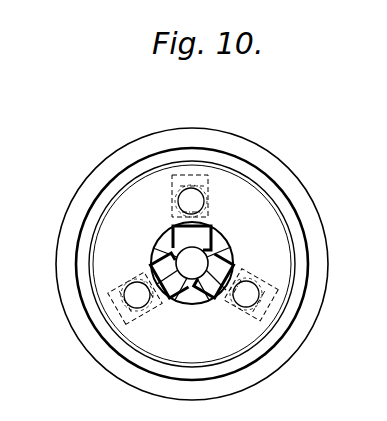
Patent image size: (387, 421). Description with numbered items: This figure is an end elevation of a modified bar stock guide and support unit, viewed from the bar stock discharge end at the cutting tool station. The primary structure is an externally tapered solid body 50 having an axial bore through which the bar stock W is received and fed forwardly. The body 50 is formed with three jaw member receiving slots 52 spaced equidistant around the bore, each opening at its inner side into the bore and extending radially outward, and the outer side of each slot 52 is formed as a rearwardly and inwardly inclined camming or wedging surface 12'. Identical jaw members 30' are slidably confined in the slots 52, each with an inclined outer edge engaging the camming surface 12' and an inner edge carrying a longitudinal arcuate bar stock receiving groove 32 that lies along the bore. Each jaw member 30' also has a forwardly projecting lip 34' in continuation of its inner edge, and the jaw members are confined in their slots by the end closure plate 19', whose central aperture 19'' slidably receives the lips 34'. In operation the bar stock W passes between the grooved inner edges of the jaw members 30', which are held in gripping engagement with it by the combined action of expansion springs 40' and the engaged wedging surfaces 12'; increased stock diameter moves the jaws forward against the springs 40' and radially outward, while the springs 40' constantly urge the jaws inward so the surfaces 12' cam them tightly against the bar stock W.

The solid body 50 is at (268, 186).
The end closure plate 19' is at (156, 264).
The central aperture 19'' is at (253, 259).
The bar stock W is at (200, 260).
The spokes / web 32 is at (152, 278).
The forwardly projecting lip 34' is at (177, 263).
The jaw member receiving slot 52 is at (208, 212).
The jaw member 30' is at (190, 211).
The camming or wedging surface 12' is at (219, 235).
The expansion spring 40' is at (162, 255).